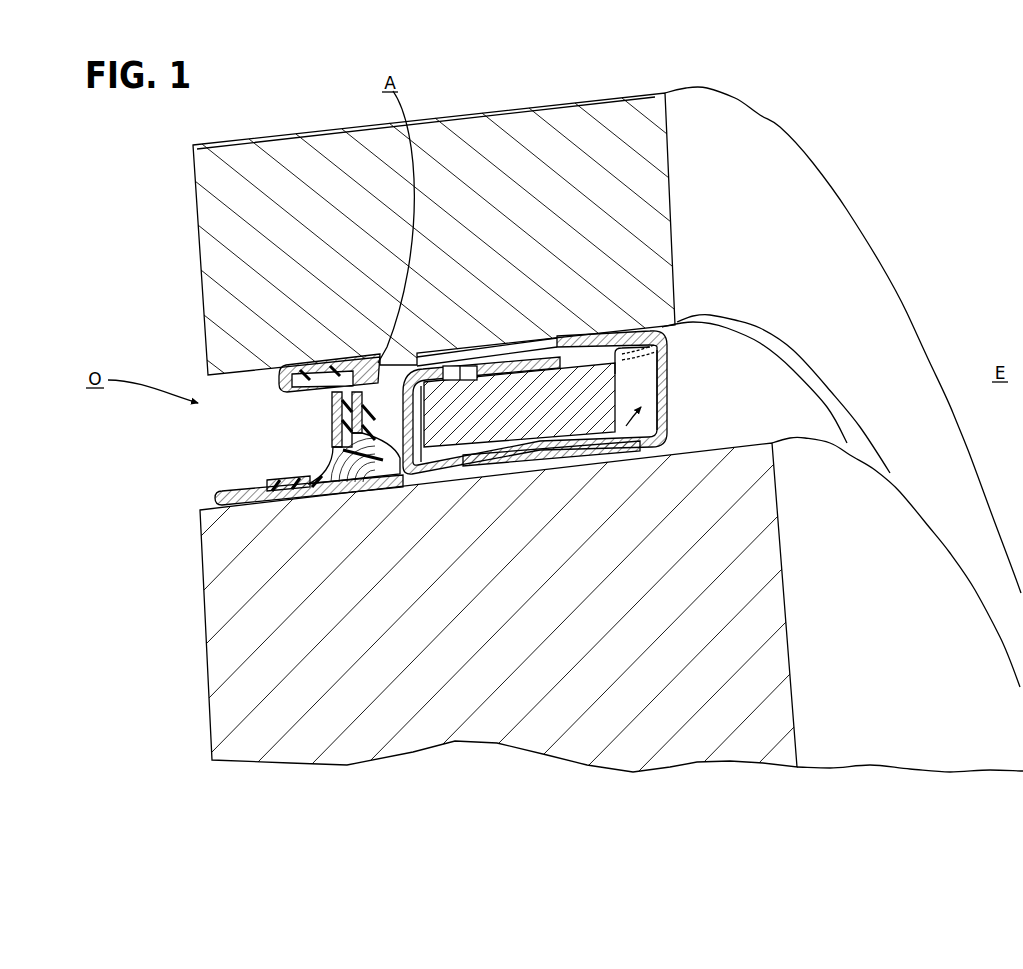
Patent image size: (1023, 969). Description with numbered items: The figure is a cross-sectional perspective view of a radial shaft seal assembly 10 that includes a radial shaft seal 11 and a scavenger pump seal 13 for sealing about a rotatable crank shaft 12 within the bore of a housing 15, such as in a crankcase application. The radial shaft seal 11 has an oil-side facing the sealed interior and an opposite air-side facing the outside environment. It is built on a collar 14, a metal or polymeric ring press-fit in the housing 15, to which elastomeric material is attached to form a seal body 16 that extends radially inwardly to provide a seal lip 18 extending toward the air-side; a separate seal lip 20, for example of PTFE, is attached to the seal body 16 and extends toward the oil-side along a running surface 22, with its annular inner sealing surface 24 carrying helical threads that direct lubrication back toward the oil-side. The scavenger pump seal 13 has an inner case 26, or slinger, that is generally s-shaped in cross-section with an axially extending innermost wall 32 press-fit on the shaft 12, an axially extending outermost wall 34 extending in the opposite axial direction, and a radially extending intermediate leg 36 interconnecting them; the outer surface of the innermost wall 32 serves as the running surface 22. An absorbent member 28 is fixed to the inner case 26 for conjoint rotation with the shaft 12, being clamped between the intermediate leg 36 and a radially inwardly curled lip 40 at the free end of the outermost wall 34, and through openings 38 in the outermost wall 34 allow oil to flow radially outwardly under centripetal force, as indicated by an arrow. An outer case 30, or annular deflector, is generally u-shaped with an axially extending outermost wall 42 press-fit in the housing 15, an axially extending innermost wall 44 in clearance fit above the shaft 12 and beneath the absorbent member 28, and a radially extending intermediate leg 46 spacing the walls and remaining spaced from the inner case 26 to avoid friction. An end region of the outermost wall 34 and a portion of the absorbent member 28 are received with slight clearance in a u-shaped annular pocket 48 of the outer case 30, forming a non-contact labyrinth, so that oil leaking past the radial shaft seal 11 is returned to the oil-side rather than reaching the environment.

The radial shaft seal assembly 10 is at (870, 104).
The radial shaft seal 11 is at (231, 406).
The crank shaft 12 is at (204, 594).
The scavenger pump seal 13 is at (710, 262).
The collar 14 is at (368, 362).
The housing 15 is at (880, 315).
The seal body 16 is at (333, 445).
The seal lip 18 is at (352, 358).
The seal lip 20 is at (325, 468).
The running surface 22 is at (252, 490).
The annular inner sealing surface 24 is at (302, 500).
The inner case 26 is at (315, 503).
The absorbent member 28 is at (567, 413).
The outer case 30 is at (627, 324).
The innermost wall 32 is at (291, 487).
The outermost wall 34 is at (535, 376).
The intermediate leg 36 is at (437, 440).
The through openings 38 is at (462, 376).
The lip 40 is at (660, 357).
The outermost wall 42 is at (588, 333).
The innermost wall 44 is at (497, 464).
The intermediate leg 46 is at (662, 388).
The annular pocket 48 is at (665, 421).